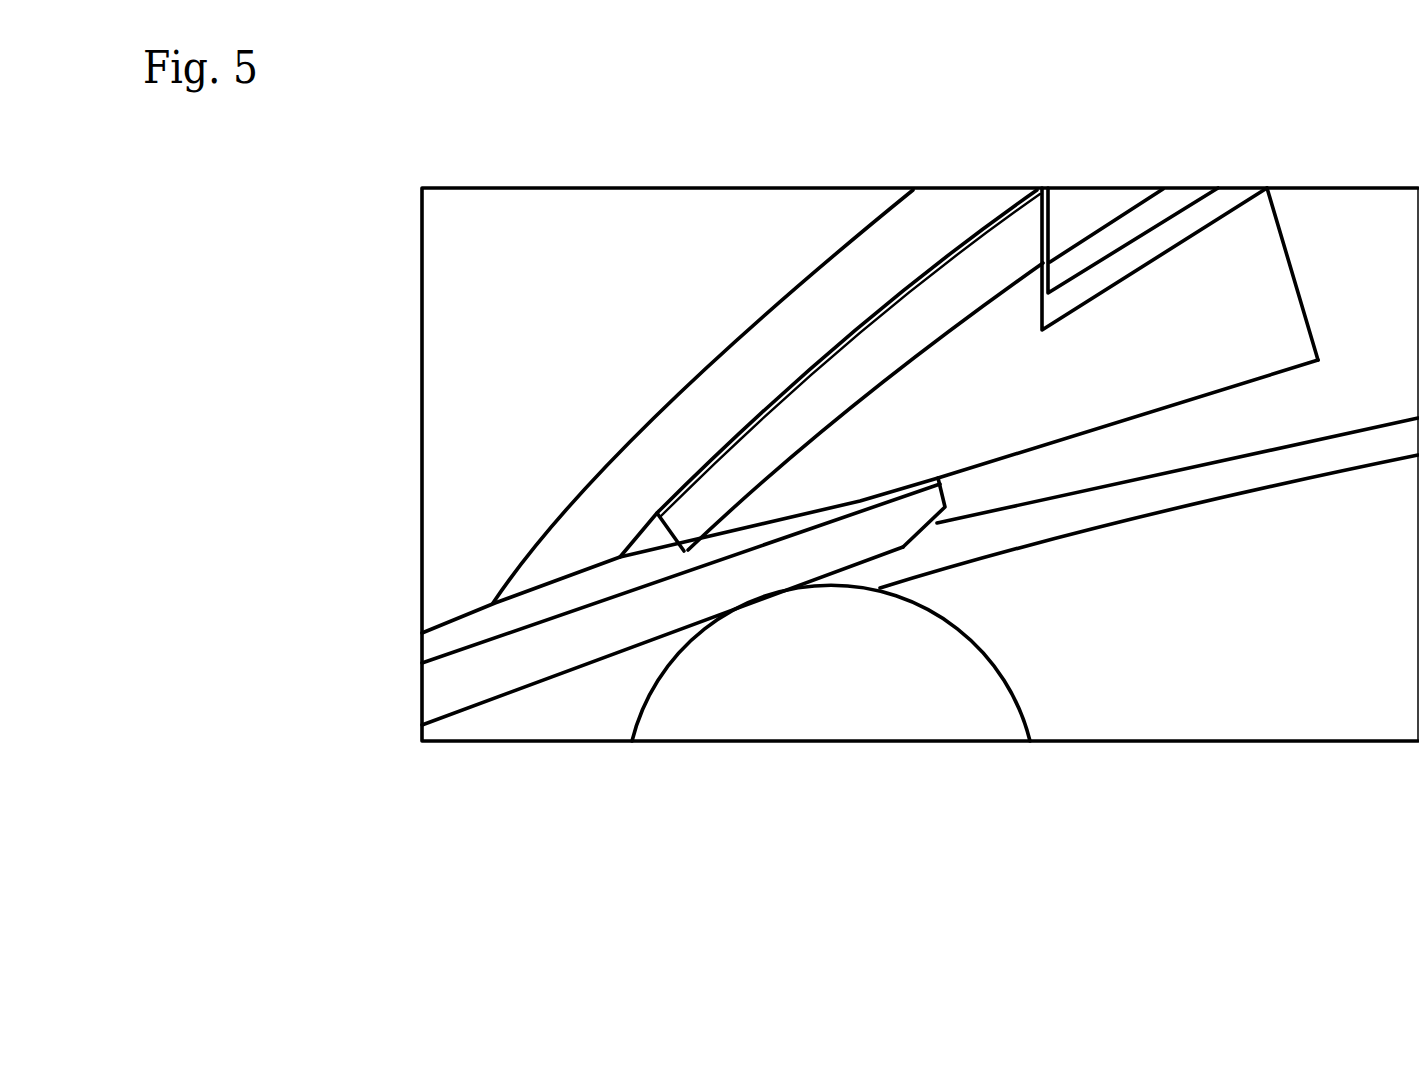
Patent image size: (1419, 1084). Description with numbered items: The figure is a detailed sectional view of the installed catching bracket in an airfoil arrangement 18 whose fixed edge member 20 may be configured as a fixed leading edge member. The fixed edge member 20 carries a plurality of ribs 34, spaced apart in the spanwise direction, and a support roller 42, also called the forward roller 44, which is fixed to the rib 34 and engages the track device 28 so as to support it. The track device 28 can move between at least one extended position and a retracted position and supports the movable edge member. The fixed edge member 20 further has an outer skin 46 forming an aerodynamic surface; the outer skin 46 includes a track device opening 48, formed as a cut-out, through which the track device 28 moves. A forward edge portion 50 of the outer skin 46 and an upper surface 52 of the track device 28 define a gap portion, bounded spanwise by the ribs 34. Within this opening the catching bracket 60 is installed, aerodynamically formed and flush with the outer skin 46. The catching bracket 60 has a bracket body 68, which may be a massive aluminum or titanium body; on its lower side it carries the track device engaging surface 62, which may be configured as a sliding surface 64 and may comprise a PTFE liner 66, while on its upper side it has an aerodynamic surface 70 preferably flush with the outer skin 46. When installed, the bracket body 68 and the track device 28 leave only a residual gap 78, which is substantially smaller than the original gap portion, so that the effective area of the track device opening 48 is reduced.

The airfoil arrangement 18 is at (505, 147).
The fixed edge member 20 is at (636, 242).
The track device 28 is at (500, 675).
The ribs 34 is at (1365, 218).
The support roller 42 is at (700, 728).
The forward roller 44 is at (807, 723).
The outer skin 46 is at (930, 207).
The track device opening 48 is at (620, 518).
The forward edge portion 50 is at (1058, 270).
The upper surface 52 is at (928, 500).
The catching bracket 60 is at (857, 378).
The track device engaging surface 62 is at (1107, 425).
The sliding surface 64 is at (1168, 415).
The PTFE liner 66 is at (1253, 383).
The bracket body 68 is at (1260, 227).
The aerodynamic surface 70 is at (775, 432).
The residual gap 78 is at (620, 553).